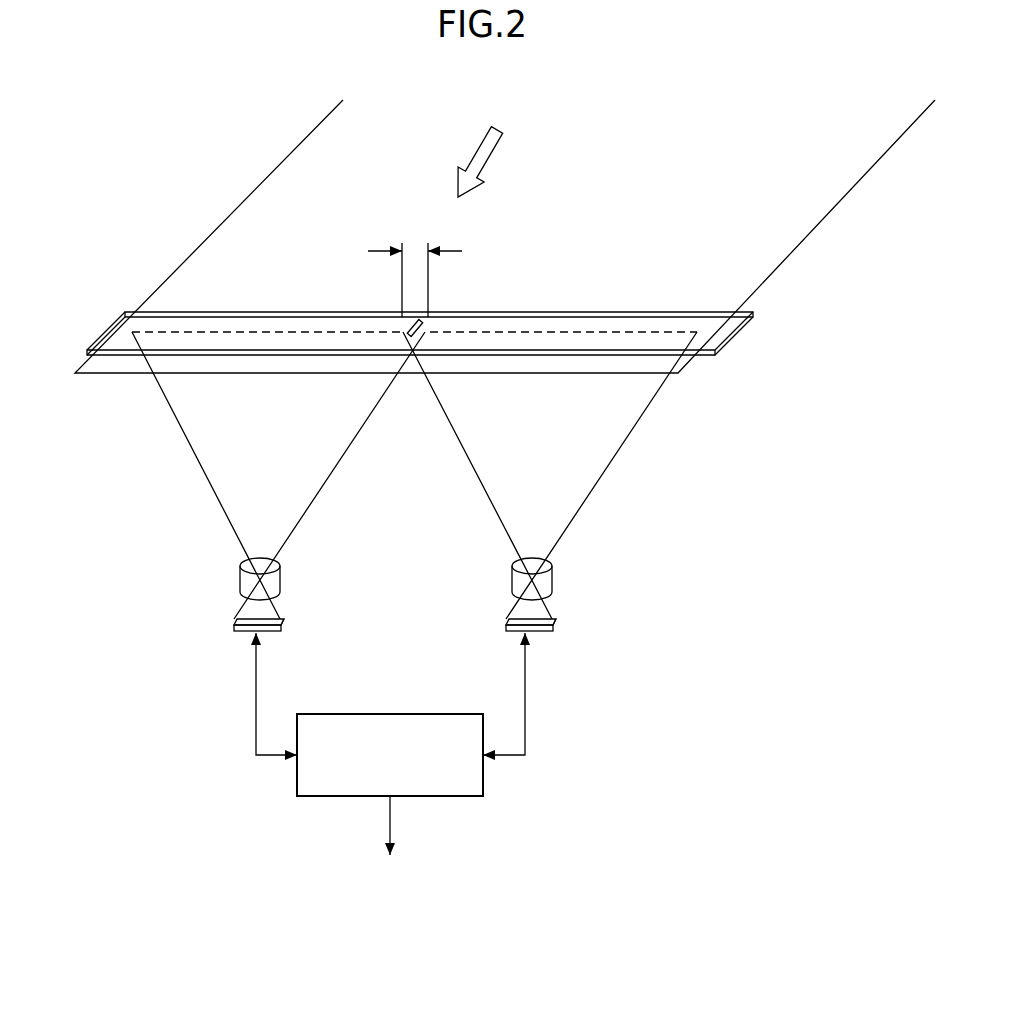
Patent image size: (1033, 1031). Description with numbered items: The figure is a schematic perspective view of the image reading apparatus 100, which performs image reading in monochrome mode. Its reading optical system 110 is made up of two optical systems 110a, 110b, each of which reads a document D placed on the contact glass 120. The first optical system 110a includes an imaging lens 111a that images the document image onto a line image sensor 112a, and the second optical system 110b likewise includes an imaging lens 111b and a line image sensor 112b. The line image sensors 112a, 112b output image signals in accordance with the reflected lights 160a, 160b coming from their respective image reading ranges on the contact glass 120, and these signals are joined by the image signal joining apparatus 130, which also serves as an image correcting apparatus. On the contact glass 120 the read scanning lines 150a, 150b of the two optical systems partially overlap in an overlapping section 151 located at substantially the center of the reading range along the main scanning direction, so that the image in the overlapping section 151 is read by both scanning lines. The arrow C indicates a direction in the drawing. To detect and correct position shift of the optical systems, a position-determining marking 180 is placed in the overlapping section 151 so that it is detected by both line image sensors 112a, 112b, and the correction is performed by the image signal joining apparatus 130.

The image reading apparatus 100 is at (88, 276).
The reading optical system 110 is at (716, 482).
The optical system 110a is at (201, 558).
The optical system 110b is at (589, 566).
The imaging lens 111a is at (238, 580).
The imaging lens 111b is at (556, 582).
The line image sensor 112a is at (248, 632).
The line image sensor 112b is at (537, 632).
The contact glass 120 is at (727, 340).
The image signal joining apparatus 130 is at (440, 797).
The read scanning line 150a is at (231, 330).
The read scanning line 150b is at (596, 330).
The overlapping section 151 is at (412, 243).
The reflected light 160a is at (202, 430).
The reflected light 160b is at (602, 425).
The position-determining marking 180 is at (405, 332).
The conveyance direction C is at (490, 162).
The document D is at (795, 228).